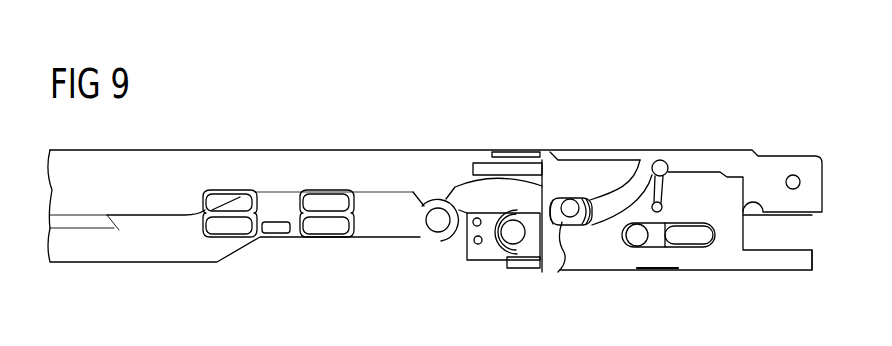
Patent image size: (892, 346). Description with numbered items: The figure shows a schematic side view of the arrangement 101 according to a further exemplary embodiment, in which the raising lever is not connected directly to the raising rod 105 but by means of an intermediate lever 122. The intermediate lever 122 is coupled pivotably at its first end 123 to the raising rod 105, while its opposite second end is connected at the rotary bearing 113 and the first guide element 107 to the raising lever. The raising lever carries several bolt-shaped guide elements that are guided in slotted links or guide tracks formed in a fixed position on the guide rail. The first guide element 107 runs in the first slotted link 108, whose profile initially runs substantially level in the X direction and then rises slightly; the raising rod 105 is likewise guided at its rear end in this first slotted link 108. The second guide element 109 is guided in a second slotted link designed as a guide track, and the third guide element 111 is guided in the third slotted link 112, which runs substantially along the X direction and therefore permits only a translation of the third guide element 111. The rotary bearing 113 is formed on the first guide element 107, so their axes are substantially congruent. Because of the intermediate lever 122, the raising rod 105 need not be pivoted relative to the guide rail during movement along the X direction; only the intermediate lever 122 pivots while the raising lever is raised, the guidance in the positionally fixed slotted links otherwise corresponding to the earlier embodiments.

The arrangement 101 is at (771, 134).
The raising rod 105 is at (372, 228).
The first guide element 107 is at (568, 204).
The first slotted link 108 is at (610, 197).
The second guide element 109 is at (660, 160).
The third guide element 111 is at (643, 247).
The third slotted link 112 is at (692, 237).
The rotary bearing 113 is at (558, 272).
The intermediate lever 122 is at (463, 190).
The first end 123 is at (434, 242).